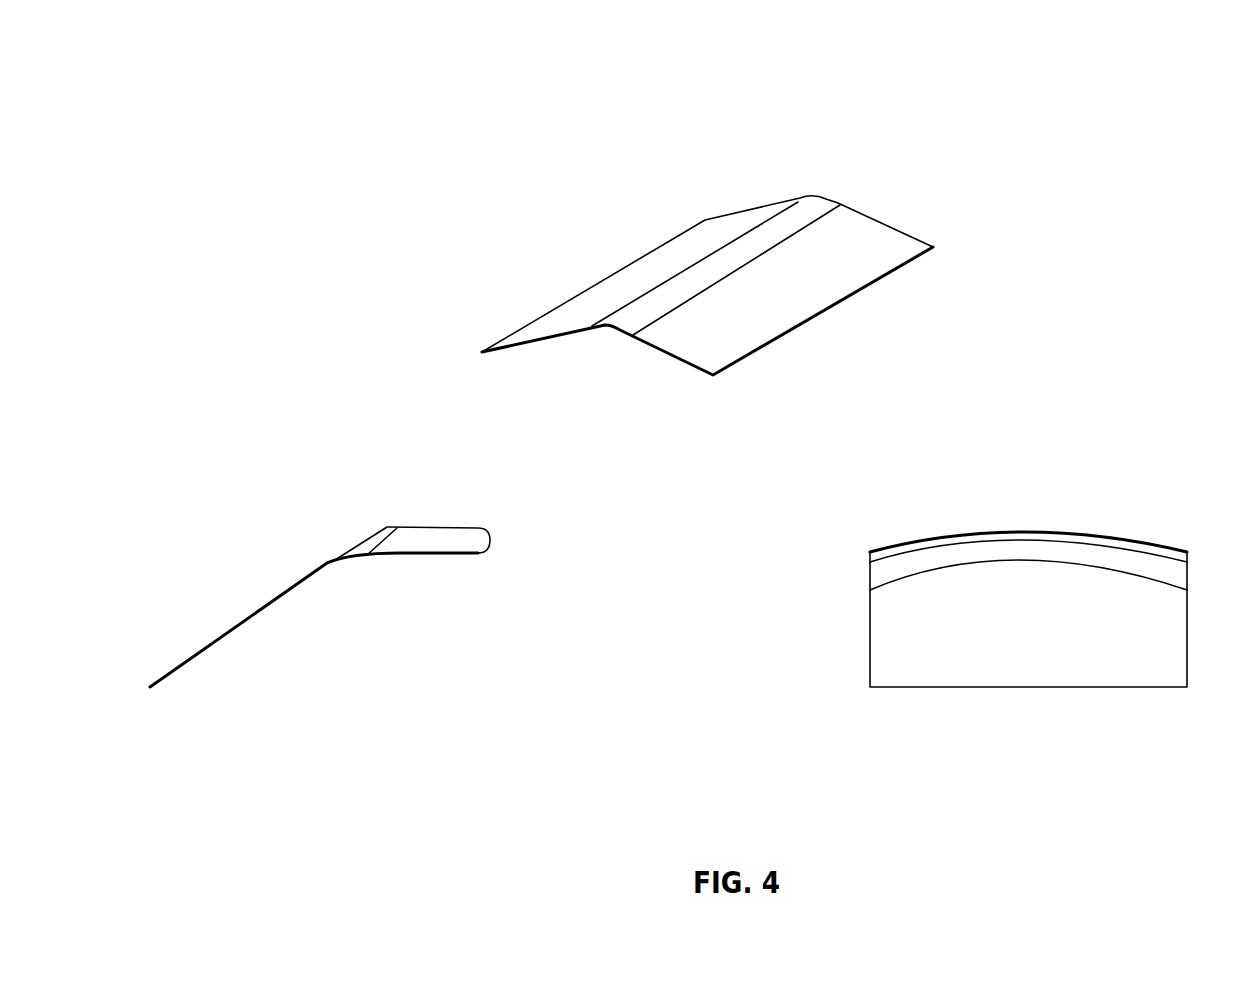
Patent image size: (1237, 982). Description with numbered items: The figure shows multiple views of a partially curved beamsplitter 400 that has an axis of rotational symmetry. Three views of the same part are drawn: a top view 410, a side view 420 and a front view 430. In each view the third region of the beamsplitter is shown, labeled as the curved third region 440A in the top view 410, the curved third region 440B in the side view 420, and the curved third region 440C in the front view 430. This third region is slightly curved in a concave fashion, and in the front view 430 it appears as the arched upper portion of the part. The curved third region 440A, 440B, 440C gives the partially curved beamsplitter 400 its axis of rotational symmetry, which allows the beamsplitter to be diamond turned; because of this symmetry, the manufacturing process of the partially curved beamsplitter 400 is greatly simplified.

The partially curved beamsplitter 400 is at (212, 64).
The top view 410 is at (748, 180).
The side view 420 is at (377, 488).
The front view 430 is at (1045, 501).
The curved third region 440A is at (857, 256).
The curved third region 440B is at (440, 543).
The curved third region 440C is at (997, 547).